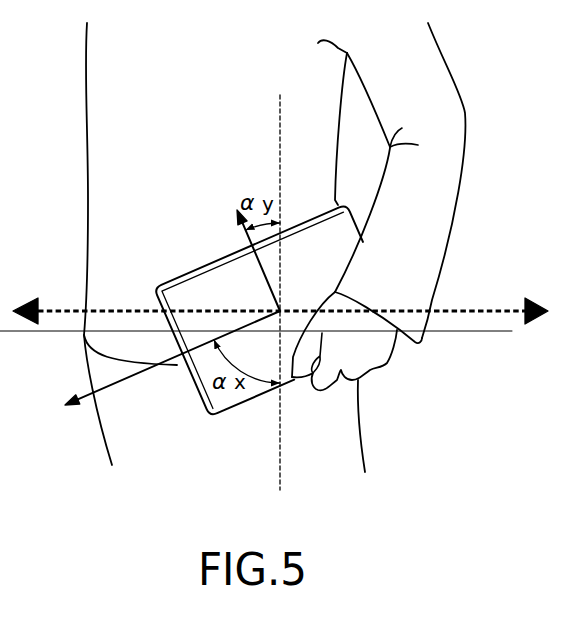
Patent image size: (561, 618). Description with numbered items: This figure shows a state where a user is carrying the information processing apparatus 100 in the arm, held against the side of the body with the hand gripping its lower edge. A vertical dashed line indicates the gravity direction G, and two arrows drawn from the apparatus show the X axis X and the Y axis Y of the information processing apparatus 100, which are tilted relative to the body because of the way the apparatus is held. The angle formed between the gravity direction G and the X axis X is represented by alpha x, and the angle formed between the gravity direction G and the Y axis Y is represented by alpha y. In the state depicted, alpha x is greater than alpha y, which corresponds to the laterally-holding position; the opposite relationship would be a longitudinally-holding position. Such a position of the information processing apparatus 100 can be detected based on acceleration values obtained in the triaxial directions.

The information processing apparatus 100 is at (183, 272).
The gravity direction G is at (281, 279).
The X axis X is at (160, 369).
The Y axis Y is at (246, 252).